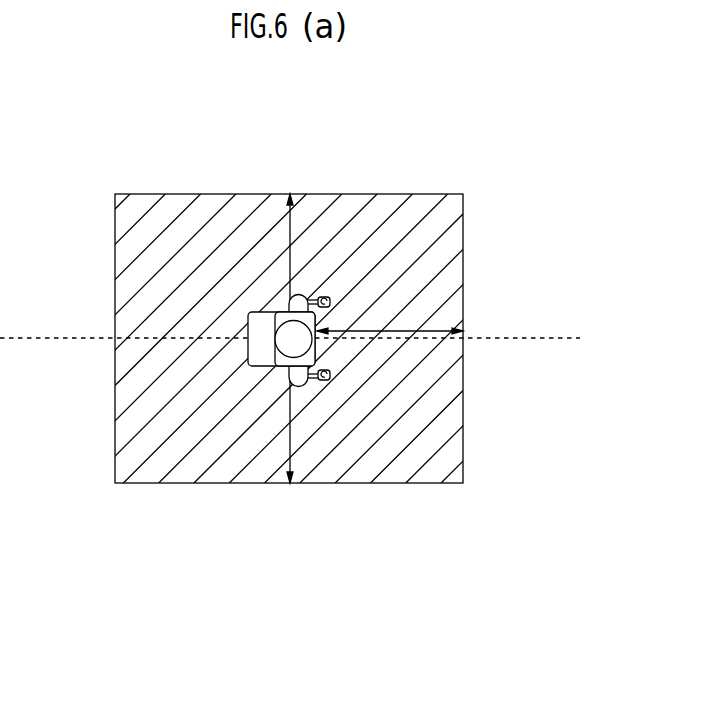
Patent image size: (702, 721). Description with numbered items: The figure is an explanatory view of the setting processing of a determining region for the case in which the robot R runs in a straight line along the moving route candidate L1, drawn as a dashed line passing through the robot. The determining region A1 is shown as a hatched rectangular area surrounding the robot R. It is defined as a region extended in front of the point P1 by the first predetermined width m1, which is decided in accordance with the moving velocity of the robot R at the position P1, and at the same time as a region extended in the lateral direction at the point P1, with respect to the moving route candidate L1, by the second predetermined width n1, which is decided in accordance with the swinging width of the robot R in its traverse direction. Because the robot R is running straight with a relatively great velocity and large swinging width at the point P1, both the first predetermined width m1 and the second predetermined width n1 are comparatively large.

The determining region A1 is at (417, 203).
The moving route candidate L1 is at (529, 337).
The second predetermined width n1 is at (281, 338).
The first predetermined width m1 is at (390, 317).
The robot R is at (247, 347).
The point P1 is at (292, 342).